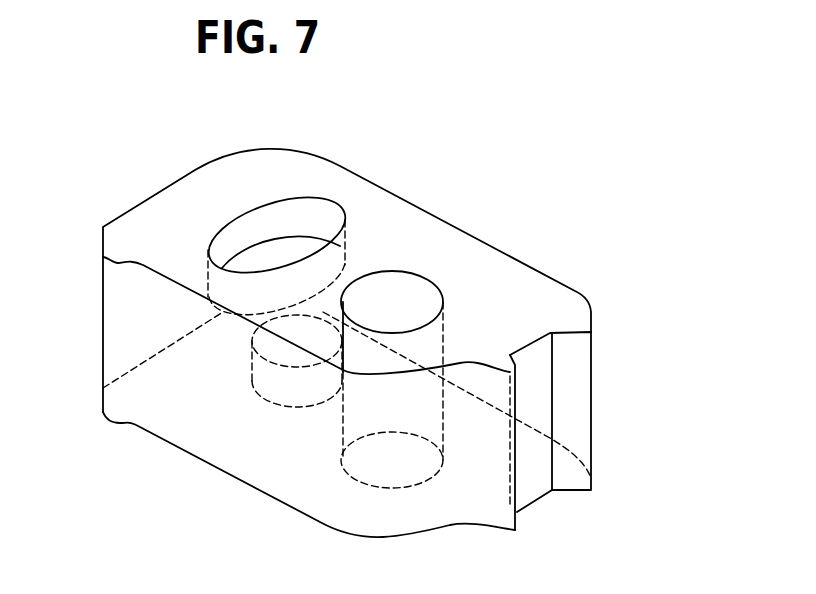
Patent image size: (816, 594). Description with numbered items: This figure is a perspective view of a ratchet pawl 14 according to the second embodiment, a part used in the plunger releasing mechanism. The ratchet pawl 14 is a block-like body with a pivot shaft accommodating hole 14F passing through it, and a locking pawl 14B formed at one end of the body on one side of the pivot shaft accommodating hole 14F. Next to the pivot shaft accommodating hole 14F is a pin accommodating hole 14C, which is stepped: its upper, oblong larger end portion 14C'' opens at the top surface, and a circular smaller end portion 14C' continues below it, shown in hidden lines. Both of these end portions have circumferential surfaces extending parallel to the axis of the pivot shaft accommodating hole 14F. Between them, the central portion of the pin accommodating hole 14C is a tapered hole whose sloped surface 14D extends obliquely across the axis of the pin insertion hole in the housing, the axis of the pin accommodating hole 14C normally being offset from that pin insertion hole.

The ratchet pawl 14 is at (389, 206).
The locking pawl 14B is at (573, 392).
The pin accommodating hole 14C is at (297, 182).
The circular smaller end portion 14C' is at (263, 432).
The oblong larger end portion 14C'' is at (258, 206).
The sloped surface 14D is at (247, 322).
The pivot shaft accommodating hole 14F is at (404, 292).